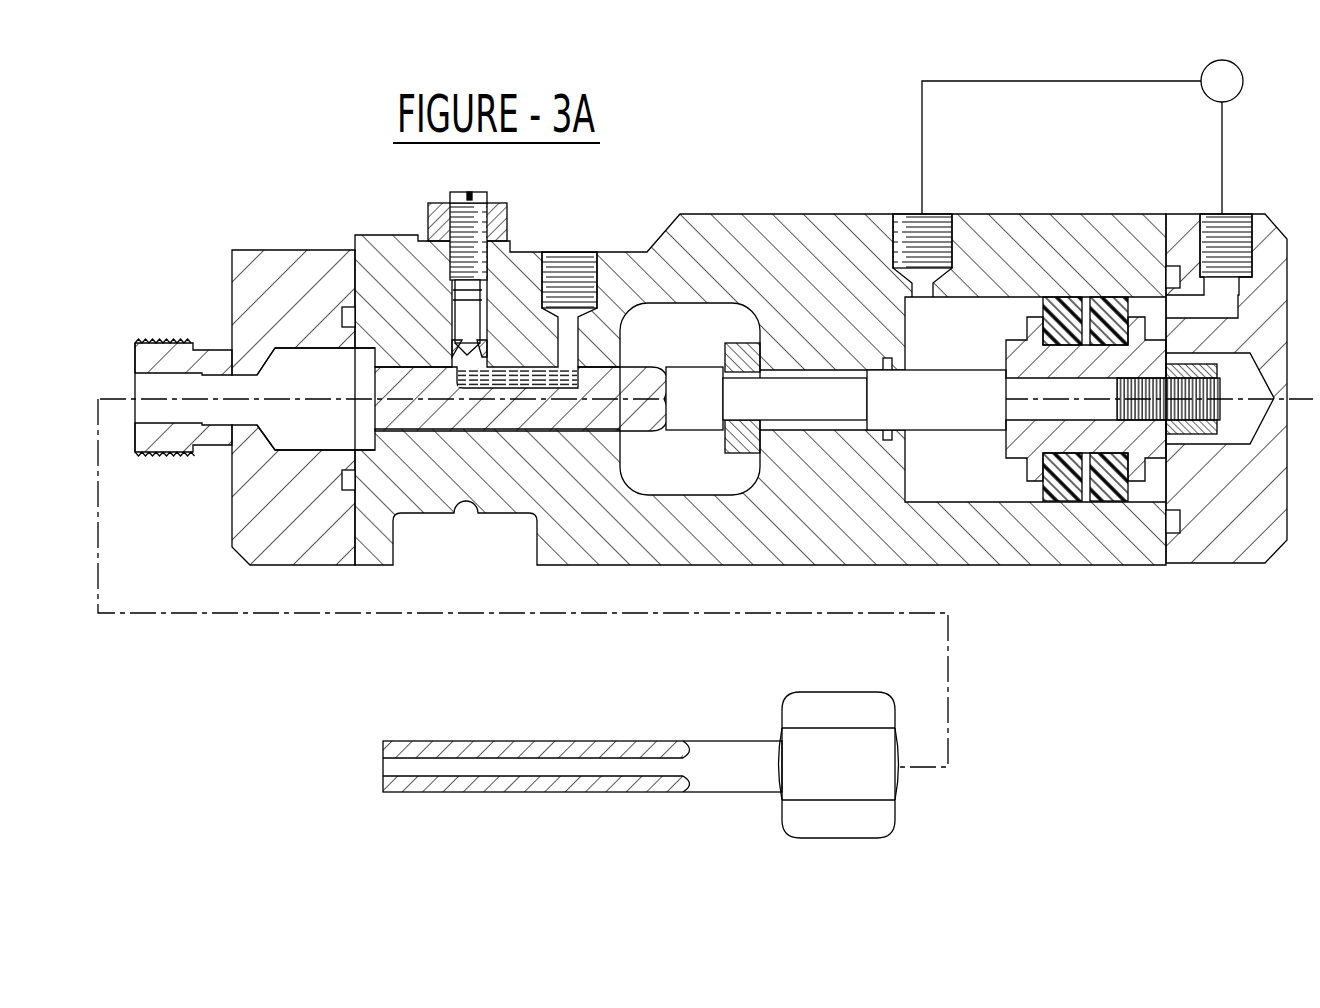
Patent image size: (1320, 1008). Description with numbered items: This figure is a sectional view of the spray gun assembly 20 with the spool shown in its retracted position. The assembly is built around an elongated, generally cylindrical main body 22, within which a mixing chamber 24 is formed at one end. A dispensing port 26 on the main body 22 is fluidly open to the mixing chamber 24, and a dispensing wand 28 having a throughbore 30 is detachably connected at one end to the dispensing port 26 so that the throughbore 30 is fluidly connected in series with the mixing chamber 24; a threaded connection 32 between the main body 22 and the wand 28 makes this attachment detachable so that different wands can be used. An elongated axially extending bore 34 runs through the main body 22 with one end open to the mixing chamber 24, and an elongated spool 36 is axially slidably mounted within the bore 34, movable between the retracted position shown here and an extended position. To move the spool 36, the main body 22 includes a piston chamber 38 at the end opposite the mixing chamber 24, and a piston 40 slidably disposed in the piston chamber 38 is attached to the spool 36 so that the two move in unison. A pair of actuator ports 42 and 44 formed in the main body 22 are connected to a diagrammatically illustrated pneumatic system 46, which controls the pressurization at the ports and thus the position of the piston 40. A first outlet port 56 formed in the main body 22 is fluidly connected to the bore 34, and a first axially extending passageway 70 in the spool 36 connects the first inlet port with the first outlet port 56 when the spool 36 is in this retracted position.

The spray gun assembly 20 is at (686, 330).
The main body 22 is at (1035, 565).
The mixing chamber 24 is at (320, 392).
The dispensing port 26 is at (159, 372).
The dispensing wand 28 is at (641, 760).
The throughbore 30 is at (519, 766).
The threaded connection 32 is at (165, 345).
The bore 34 is at (818, 372).
The spool 36 is at (549, 386).
The piston chamber 38 is at (968, 498).
The piston 40 is at (1108, 300).
The actuator port 42 is at (903, 236).
The actuator port 44 is at (1251, 232).
The pneumatic system 46 is at (1243, 88).
The first outlet port 56 is at (593, 262).
The first axially extending passageway 70 is at (524, 377).